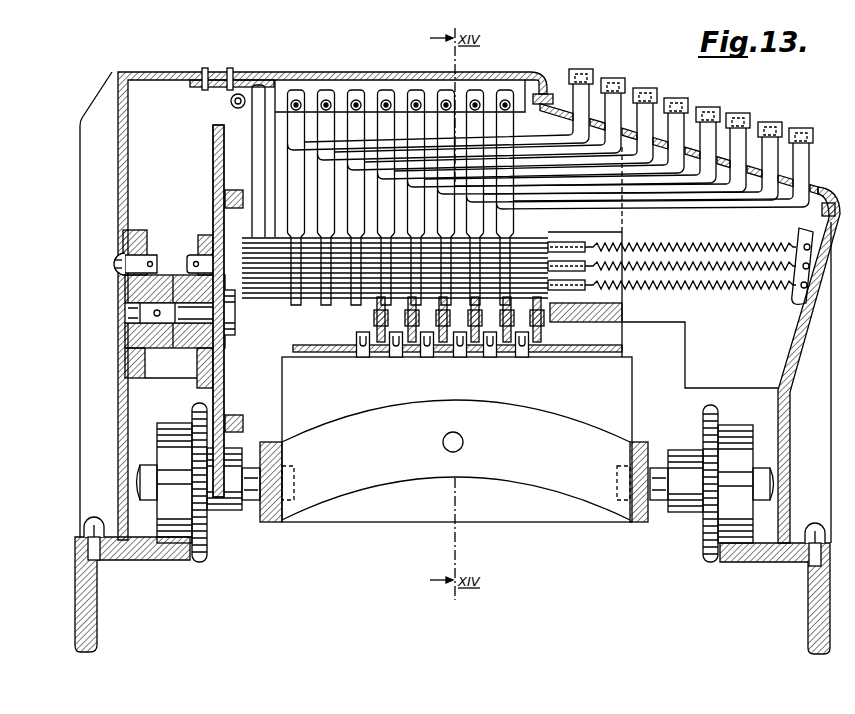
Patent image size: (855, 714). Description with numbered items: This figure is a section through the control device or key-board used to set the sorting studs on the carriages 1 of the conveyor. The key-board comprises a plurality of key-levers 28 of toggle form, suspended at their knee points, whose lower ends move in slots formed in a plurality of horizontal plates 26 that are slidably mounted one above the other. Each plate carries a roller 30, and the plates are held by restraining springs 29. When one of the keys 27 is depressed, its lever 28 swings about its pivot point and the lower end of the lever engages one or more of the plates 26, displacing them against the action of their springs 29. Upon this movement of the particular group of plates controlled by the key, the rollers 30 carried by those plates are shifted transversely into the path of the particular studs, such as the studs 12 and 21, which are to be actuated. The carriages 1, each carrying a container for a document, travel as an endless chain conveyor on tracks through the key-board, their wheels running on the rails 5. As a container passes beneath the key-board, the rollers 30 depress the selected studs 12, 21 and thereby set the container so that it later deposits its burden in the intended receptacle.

The carriage 1 is at (270, 521).
The rail 5 is at (762, 563).
The stud 12 is at (462, 353).
The stud 21 is at (365, 353).
The horizontal plate 26 is at (262, 272).
The key 27 is at (741, 114).
The key-lever 28 is at (294, 92).
The restraining spring 29 is at (700, 250).
The roller 30 is at (546, 350).